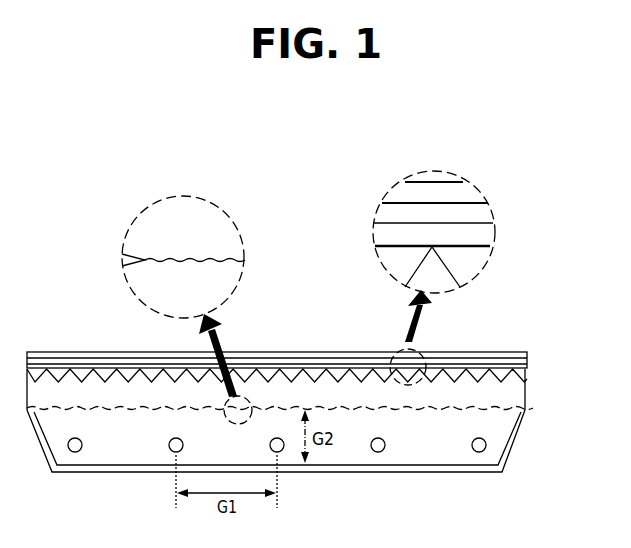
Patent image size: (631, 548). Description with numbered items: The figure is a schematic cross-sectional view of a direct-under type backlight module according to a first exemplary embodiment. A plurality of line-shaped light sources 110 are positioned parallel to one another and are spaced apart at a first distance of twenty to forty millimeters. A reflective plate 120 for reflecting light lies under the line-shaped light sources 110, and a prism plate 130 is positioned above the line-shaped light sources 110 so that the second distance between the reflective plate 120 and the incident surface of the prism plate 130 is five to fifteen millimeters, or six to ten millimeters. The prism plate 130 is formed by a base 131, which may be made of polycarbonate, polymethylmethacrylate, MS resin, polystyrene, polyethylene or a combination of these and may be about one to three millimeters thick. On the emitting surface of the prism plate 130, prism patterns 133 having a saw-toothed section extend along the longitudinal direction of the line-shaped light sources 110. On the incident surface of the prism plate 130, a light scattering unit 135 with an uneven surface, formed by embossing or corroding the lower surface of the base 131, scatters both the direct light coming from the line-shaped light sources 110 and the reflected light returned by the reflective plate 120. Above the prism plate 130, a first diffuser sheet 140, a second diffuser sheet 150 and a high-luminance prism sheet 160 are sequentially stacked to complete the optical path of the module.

The line-shaped light sources 110 is at (176, 452).
The reflective plate 120 is at (517, 437).
The prism plate 130 is at (525, 391).
The base 131 is at (138, 231).
The prism patterns 133 is at (437, 270).
The light scattering unit 135 is at (143, 262).
The first diffuser sheet 140 is at (482, 238).
The second diffuser sheet 150 is at (490, 214).
The prism sheet 160 is at (473, 190).